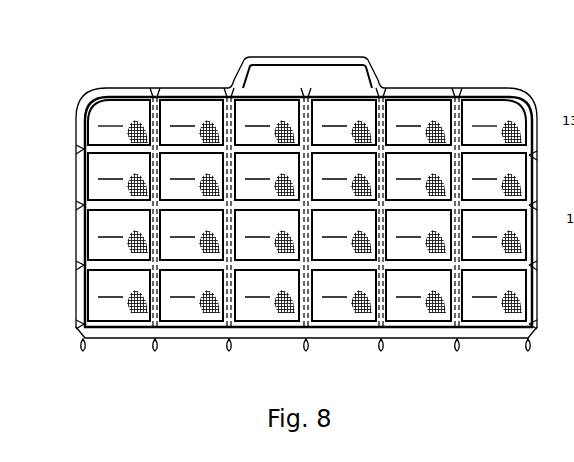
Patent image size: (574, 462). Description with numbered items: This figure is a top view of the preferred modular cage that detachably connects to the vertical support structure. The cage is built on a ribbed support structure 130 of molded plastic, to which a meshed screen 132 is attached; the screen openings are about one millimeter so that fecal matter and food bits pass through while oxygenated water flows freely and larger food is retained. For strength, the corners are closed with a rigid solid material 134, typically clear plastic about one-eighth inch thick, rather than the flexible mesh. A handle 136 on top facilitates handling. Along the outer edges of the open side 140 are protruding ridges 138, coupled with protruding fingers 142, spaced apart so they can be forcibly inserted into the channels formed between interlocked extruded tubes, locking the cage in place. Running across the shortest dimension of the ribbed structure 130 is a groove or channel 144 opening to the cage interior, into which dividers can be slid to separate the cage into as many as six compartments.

The ribbed support structure 130 is at (83, 163).
The meshed screen 132 is at (307, 210).
The solid material 134 is at (307, 122).
The handle 136 is at (346, 56).
The protruding ridges 138 is at (83, 352).
The open side 140 is at (215, 380).
The protruding fingers 142 is at (155, 352).
The groove or channel 144 is at (153, 318).